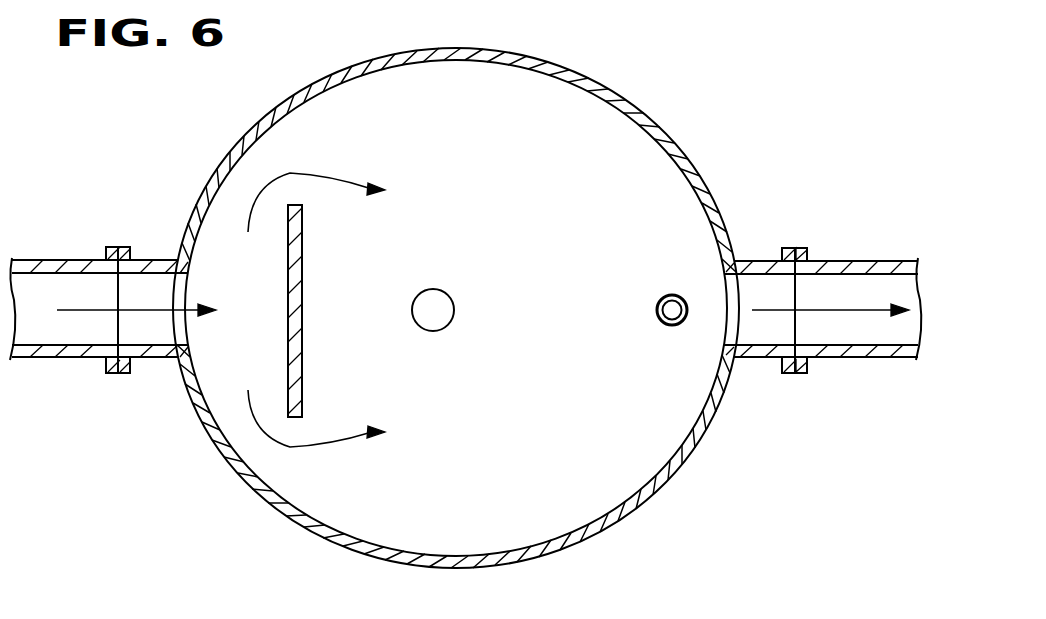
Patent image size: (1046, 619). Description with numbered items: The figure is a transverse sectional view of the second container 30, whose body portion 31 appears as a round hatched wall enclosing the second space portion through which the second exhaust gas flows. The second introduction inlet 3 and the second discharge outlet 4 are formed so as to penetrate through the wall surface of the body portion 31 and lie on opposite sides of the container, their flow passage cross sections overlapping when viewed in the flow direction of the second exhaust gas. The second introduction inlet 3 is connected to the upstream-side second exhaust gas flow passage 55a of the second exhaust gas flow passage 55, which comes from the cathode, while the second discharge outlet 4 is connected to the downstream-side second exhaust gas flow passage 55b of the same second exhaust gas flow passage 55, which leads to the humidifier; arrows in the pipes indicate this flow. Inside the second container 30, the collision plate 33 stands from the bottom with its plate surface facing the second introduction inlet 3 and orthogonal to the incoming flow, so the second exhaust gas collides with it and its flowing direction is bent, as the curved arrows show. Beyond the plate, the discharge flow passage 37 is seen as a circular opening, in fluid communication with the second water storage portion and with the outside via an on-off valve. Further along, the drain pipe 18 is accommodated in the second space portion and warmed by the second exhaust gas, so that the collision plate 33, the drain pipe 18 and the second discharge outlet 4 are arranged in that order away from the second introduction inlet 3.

The body portion 31 is at (603, 83).
The second container 30 is at (456, 307).
The second introduction inlet 3 is at (145, 289).
The second discharge outlet 4 is at (755, 292).
The collision plate 33 is at (303, 283).
The discharge flow passage 37 is at (445, 325).
The drain pipe 18 is at (655, 310).
The second exhaust gas flow passage 55 is at (465, 317).
The upstream-side second exhaust gas flow passage 55a is at (113, 325).
The downstream-side second exhaust gas flow passage 55b is at (822, 314).